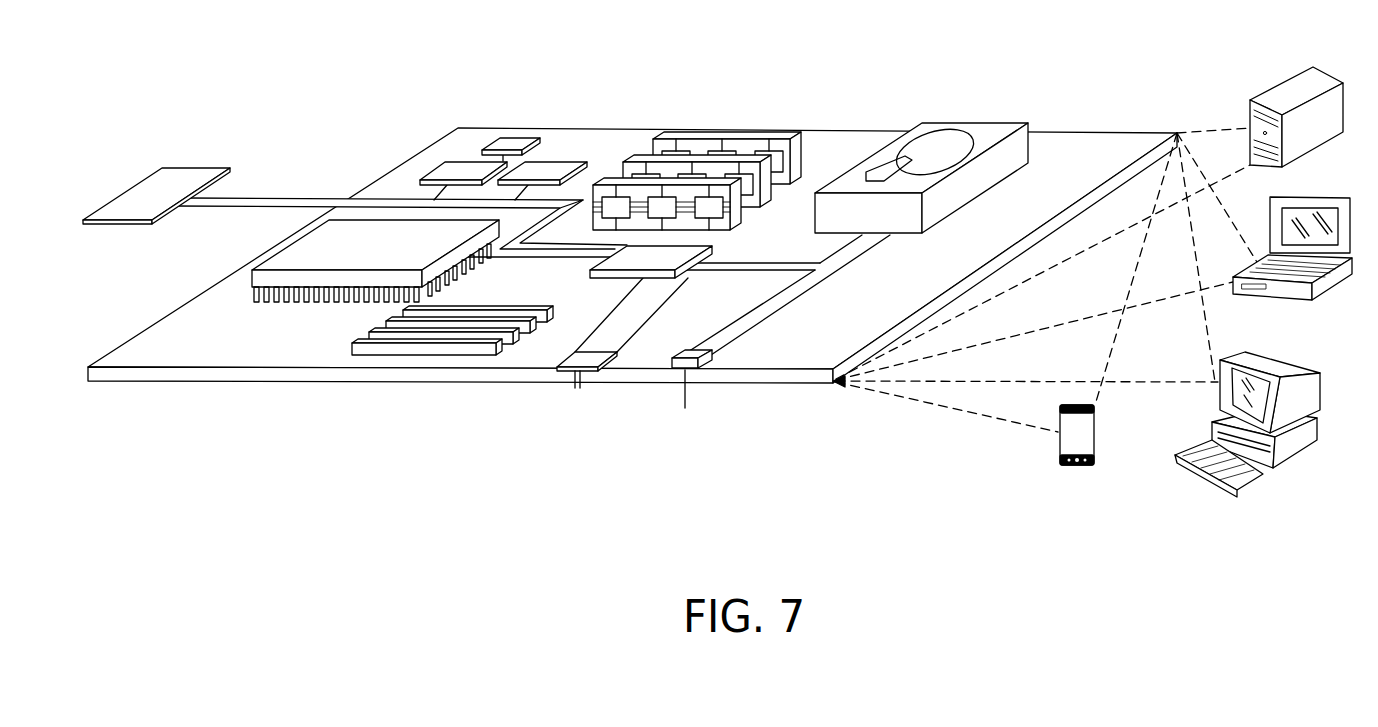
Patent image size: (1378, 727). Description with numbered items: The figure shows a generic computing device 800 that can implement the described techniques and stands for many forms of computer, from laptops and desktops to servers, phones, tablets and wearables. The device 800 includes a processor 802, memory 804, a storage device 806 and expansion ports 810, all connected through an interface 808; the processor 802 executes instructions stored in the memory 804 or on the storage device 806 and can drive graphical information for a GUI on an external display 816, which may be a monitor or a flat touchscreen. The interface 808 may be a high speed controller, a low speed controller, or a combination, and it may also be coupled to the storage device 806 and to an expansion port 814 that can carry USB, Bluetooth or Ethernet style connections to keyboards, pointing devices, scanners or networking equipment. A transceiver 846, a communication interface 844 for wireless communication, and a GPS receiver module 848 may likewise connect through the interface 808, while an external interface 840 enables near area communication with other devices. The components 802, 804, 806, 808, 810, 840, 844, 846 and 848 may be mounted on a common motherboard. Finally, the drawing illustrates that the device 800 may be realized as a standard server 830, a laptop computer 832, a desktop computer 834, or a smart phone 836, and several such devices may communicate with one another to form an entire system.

The computing device 800 is at (388, 92).
The processor 802 is at (277, 252).
The memory 804 is at (731, 141).
The storage device 806 is at (965, 124).
The interface 808 is at (618, 262).
The expansion ports 810 is at (377, 333).
The expansion port 814 is at (700, 365).
The display 816 is at (186, 180).
The standard server 830 is at (1273, 95).
The laptop computer 832 is at (1325, 198).
The desktop computer 834 is at (1318, 378).
The smart phone 836 is at (1070, 465).
The external interface 840 is at (602, 350).
The communication interface 844 is at (464, 163).
The transceiver 846 is at (515, 140).
The GPS receiver module 848 is at (552, 164).